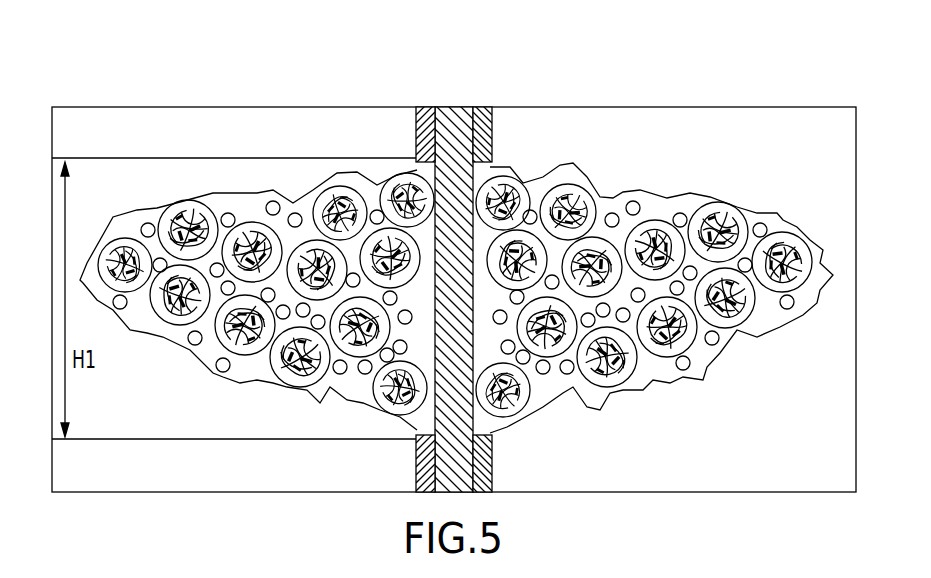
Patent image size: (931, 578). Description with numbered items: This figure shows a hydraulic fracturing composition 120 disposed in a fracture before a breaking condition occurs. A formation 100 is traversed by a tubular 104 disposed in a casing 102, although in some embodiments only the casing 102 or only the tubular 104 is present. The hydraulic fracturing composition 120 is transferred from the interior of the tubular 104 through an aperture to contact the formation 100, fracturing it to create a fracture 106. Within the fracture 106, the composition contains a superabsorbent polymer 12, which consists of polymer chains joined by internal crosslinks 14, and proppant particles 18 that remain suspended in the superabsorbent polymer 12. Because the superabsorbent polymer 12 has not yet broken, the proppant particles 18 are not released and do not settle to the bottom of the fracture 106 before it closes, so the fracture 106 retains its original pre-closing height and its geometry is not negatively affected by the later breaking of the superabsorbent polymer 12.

The formation 100 is at (105, 133).
The casing 102 is at (427, 128).
The tubular 104 is at (455, 123).
The fracture 106 is at (637, 192).
The superabsorbent polymer 12 is at (130, 240).
The internal crosslinks 14 is at (260, 227).
The proppant particles 18 is at (612, 213).
The hydraulic fracturing composition 120 is at (680, 197).